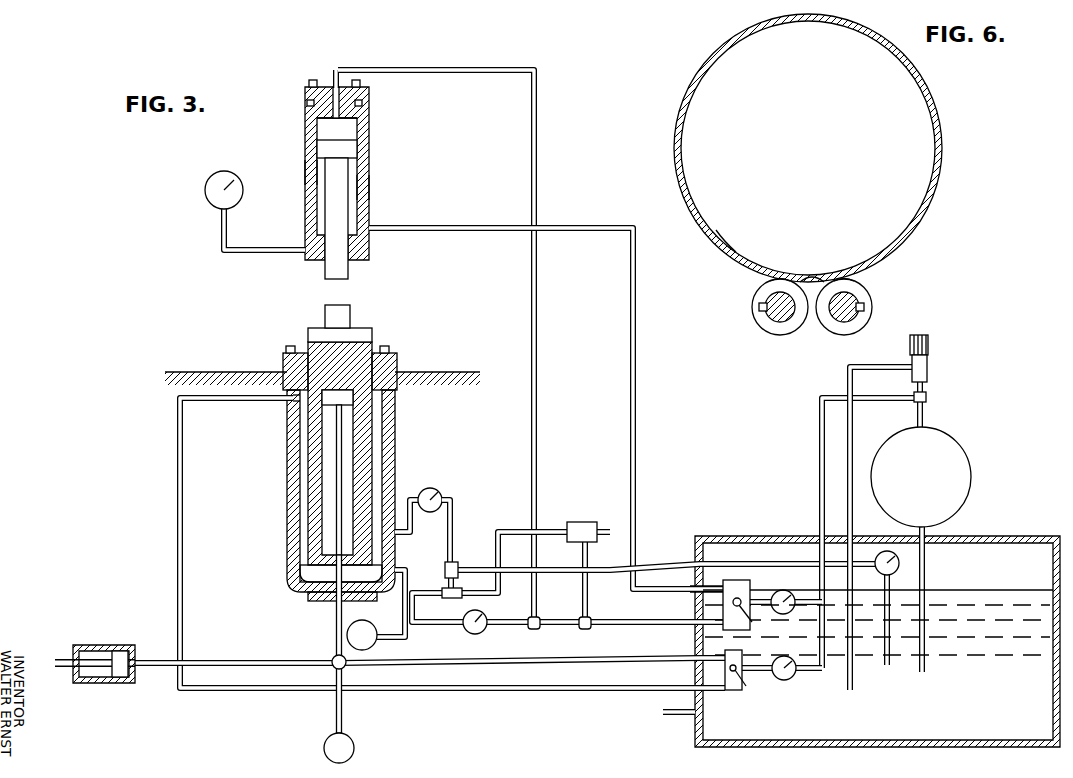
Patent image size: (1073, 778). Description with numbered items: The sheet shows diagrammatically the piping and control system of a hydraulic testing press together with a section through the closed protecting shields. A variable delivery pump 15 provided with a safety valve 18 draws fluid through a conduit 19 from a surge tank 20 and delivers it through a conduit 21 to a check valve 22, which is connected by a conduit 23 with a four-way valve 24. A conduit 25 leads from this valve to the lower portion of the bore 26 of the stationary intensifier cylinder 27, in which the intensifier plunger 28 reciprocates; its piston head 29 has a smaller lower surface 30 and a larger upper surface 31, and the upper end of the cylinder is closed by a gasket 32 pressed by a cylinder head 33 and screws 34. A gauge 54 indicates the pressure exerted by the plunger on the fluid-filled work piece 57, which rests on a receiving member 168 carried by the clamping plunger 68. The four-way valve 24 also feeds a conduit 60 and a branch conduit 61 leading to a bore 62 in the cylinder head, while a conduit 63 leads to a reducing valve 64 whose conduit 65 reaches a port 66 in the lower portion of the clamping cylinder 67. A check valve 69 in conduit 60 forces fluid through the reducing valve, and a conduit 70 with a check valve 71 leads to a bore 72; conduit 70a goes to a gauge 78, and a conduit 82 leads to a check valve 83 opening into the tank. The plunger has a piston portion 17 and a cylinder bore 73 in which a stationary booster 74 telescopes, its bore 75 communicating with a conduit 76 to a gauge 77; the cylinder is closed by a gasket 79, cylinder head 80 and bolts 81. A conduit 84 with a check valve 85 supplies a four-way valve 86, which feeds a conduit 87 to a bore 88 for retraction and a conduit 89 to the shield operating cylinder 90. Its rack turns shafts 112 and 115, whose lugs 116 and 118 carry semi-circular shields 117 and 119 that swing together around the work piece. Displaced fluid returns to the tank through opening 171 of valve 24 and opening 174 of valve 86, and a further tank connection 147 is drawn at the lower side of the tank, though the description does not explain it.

In FIG. 3, the variable delivery pump 15 is at (964, 461).
In FIG. 3, the piston portion 17 is at (300, 568).
In FIG. 3, the safety valve 18 is at (928, 348).
In FIG. 3, the conduit 19 is at (926, 570).
In FIG. 3, the surge tank 20 is at (1035, 536).
In FIG. 3, the conduit 21 is at (924, 405).
In FIG. 3, the check valve 22 is at (770, 628).
In FIG. 3, the conduit 23 is at (762, 598).
In FIG. 3, the four-way valve 24 is at (723, 600).
In FIG. 3, the conduit 25 is at (636, 510).
In FIG. 3, the bore 26 is at (369, 212).
In FIG. 3, the intensifier cylinder 27 is at (367, 190).
In FIG. 3, the intensifier plunger 28 is at (325, 195).
In FIG. 3, the piston head 29 is at (317, 148).
In FIG. 3, the smaller lower surface 30 is at (305, 172).
In FIG. 3, the larger upper surface 31 is at (358, 130).
In FIG. 3, the gasket 32 is at (307, 103).
In FIG. 3, the cylinder head 33 is at (307, 92).
In FIG. 3, the screws 34 is at (362, 84).
In FIG. 3, the gauge 54 is at (226, 171).
In FIG. 3, the work piece 57 is at (340, 308).
In FIG. 3, the conduit 60 is at (650, 624).
In FIG. 3, the conduit 61 is at (531, 176).
In FIG. 3, the bore 62 is at (336, 88).
In FIG. 3, the conduit 63 is at (586, 598).
In FIG. 3, the reducing valve 64 is at (588, 522).
In FIG. 3, the conduit 65 is at (552, 530).
In FIG. 3, the port 66 is at (400, 590).
In FIG. 3, the clamping cylinder 67 is at (395, 420).
In FIG. 3, the clamping plunger 68 is at (365, 340).
In FIG. 3, the check valve 69 is at (465, 630).
In FIG. 3, the conduit 70 is at (452, 528).
In FIG. 3, the conduit 70a is at (442, 594).
In FIG. 3, the check valve 71 is at (433, 488).
In FIG. 3, the bore 72 is at (396, 550).
In FIG. 3, the cylinder bore 73 is at (322, 398).
In FIG. 3, the booster 74 is at (320, 608).
In FIG. 3, the bore 75 is at (336, 432).
In FIG. 3, the conduit 76 is at (342, 724).
In FIG. 3, the gauge 77 is at (356, 748).
In FIG. 3, the gauge 78 is at (370, 620).
In FIG. 3, the gasket 79 is at (285, 370).
In FIG. 3, the cylinder head 80 is at (398, 358).
In FIG. 3, the bolts 81 is at (287, 349).
In FIG. 3, the conduit 82 is at (460, 570).
In FIG. 3, the check valve 83 is at (890, 575).
In FIG. 3, the conduit 84 is at (822, 414).
In FIG. 3, the check valve 85 is at (790, 663).
In FIG. 3, the four-way valve 86 is at (731, 690).
In FIG. 3, the conduit 87 is at (182, 500).
In FIG. 3, the bore 88 is at (290, 400).
In FIG. 3, the conduit 89 is at (613, 660).
In FIG. 3, the shield operating cylinder 90 is at (116, 645).
In FIG. 6, the shaft 112 is at (858, 298).
In FIG. 6, the shaft 115 is at (781, 324).
In FIG. 6, the lug 116 is at (873, 307).
In FIG. 6, the semi-circular shield 117 is at (940, 210).
In FIG. 6, the lug 118 is at (761, 330).
In FIG. 6, the semi-circular shield 119 is at (713, 251).
In FIG. 3, the drain pipe 147 is at (682, 716).
In FIG. 3, the receiving member 168 is at (320, 328).
In FIG. 3, the opening 171 is at (751, 616).
In FIG. 3, the opening 174 is at (752, 683).